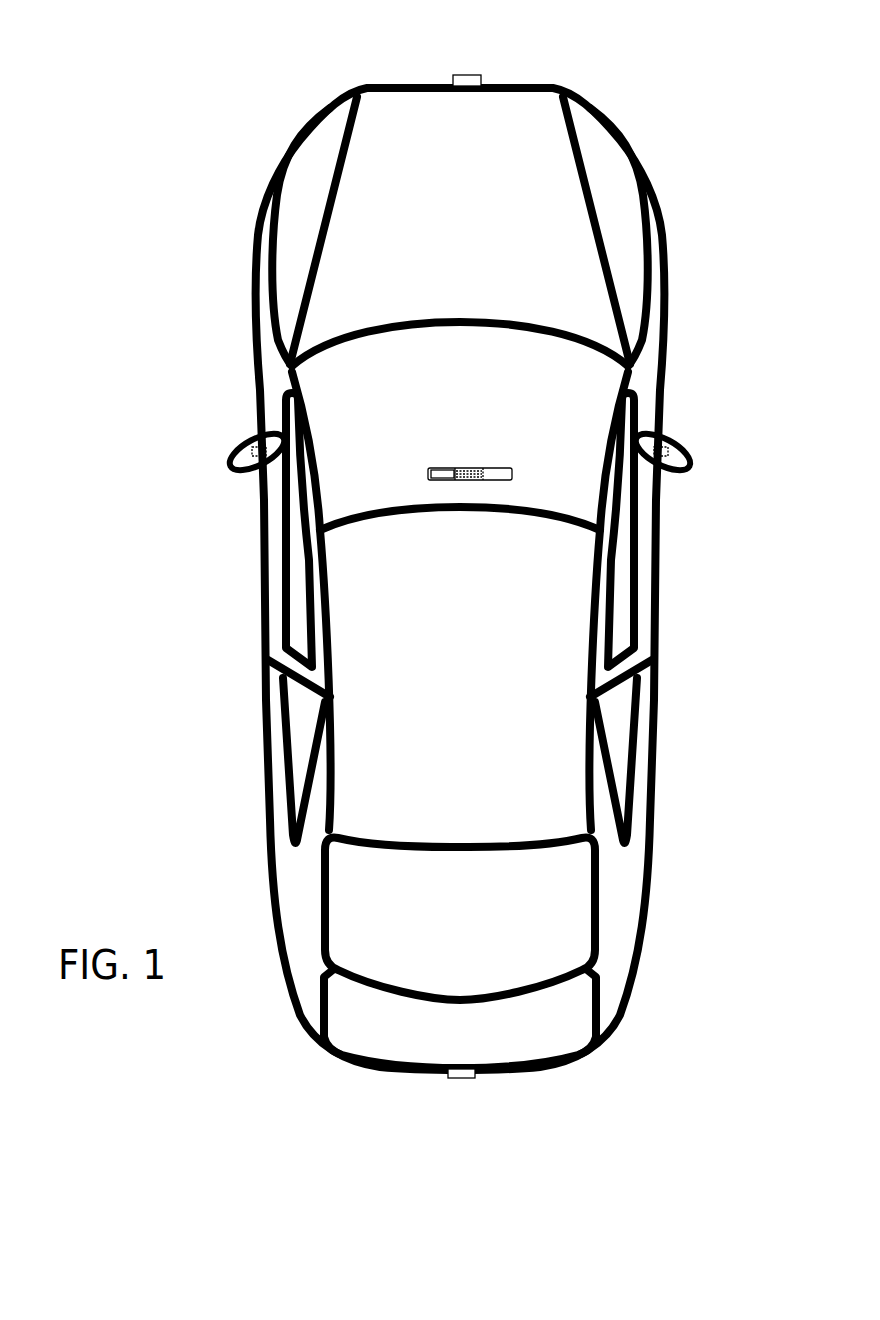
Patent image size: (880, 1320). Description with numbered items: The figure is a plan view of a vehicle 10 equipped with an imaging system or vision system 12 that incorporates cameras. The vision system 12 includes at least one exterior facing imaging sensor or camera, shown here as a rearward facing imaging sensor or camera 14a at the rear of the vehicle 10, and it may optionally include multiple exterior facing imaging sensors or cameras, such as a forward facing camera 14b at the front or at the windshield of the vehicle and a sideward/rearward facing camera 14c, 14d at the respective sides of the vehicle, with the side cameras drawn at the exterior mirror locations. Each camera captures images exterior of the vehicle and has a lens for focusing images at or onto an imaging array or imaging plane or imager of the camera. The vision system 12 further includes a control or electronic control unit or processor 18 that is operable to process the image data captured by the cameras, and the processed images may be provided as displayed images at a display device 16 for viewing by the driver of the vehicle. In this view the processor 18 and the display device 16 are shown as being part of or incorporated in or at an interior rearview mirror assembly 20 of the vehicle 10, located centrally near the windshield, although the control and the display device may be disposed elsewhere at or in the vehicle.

The vehicle 10 is at (206, 175).
The vision system 12 is at (403, 1104).
The rearward facing camera 14a is at (465, 1075).
The forward facing camera 14b is at (470, 75).
The sideward/rearward facing camera 14c is at (248, 450).
The sideward/rearward facing camera 14d is at (670, 448).
The display device 16 is at (442, 470).
The processor 18 is at (465, 465).
The interior rearview mirror assembly 20 is at (513, 468).